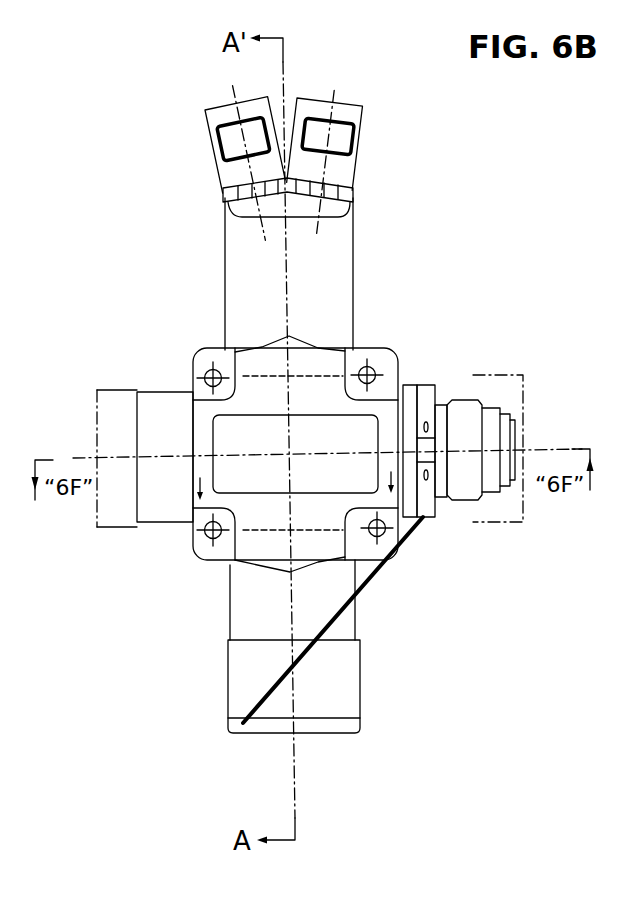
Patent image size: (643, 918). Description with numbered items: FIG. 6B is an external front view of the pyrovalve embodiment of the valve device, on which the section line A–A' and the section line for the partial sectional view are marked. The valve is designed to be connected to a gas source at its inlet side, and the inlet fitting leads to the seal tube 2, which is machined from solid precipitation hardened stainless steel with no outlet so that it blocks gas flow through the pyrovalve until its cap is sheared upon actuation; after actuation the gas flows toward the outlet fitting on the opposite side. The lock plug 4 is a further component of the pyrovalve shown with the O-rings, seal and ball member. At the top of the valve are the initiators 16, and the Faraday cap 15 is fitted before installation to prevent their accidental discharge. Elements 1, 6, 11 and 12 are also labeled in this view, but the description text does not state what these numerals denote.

The upper pipe body 1 is at (354, 293).
The seal tube 2 is at (435, 387).
The lock plug 4 is at (333, 736).
The valve body passage 6 is at (230, 433).
The outlet adapter 11 is at (92, 418).
The inlet end section 12 is at (500, 530).
The Faraday cap 15 is at (366, 108).
The initiators 16 is at (352, 175).